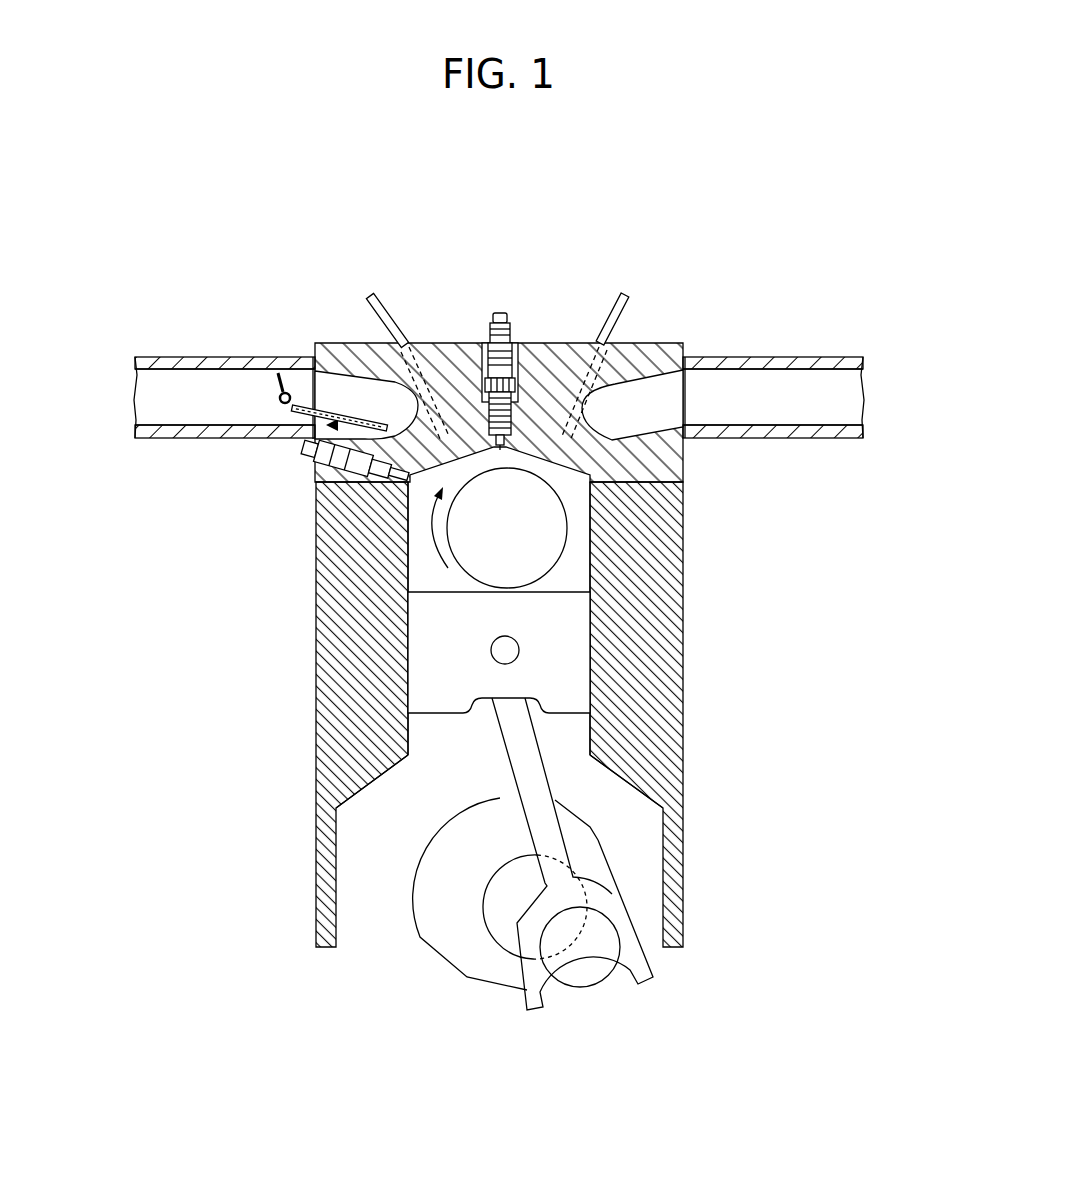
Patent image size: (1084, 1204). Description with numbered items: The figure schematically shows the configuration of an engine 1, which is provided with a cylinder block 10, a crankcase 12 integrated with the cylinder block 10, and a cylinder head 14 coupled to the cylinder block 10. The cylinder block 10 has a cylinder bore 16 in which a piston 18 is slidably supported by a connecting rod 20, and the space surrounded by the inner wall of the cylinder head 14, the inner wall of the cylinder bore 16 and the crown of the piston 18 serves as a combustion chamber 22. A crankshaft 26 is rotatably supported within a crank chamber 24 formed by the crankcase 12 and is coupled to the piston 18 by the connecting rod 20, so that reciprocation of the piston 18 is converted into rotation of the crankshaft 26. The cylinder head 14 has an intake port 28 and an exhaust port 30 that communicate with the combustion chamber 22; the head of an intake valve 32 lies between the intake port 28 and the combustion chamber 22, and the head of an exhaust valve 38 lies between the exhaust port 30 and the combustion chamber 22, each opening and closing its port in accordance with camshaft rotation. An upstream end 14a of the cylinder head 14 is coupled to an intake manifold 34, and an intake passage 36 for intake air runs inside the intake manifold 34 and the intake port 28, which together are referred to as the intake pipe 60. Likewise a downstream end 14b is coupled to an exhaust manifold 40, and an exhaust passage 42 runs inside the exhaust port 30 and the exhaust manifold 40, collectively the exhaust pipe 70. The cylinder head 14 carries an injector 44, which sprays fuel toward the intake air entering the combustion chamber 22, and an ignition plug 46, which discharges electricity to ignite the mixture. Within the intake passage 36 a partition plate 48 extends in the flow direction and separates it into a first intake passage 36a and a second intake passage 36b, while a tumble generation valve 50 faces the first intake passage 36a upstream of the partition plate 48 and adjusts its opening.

The engine 1 is at (280, 189).
The cylinder block 10 is at (683, 510).
The crankcase 12 is at (683, 703).
The cylinder head 14 is at (642, 343).
The upstream end 14a is at (318, 371).
The downstream end 14b is at (683, 351).
The cylinder bore 16 is at (583, 552).
The piston 18 is at (464, 591).
The connecting rod 20 is at (508, 768).
The combustion chamber 22 is at (427, 487).
The crank chamber 24 is at (400, 807).
The crankshaft 26 is at (608, 880).
The intake port 28 is at (313, 369).
The exhaust port 30 is at (690, 368).
The intake valve 32 is at (370, 297).
The intake manifold 34 is at (167, 357).
The intake passage 36 is at (195, 411).
The first intake passage 36a is at (365, 383).
The second intake passage 36b is at (330, 425).
The exhaust valve 38 is at (628, 297).
The exhaust manifold 40 is at (843, 357).
The exhaust passage 42 is at (786, 409).
The injector 44 is at (303, 450).
The ignition plug 46 is at (491, 330).
The partition plate 48 is at (293, 413).
The tumble generation valve 50 is at (278, 401).
The intake pipe 60 is at (142, 290).
The exhaust pipe 70 is at (860, 282).